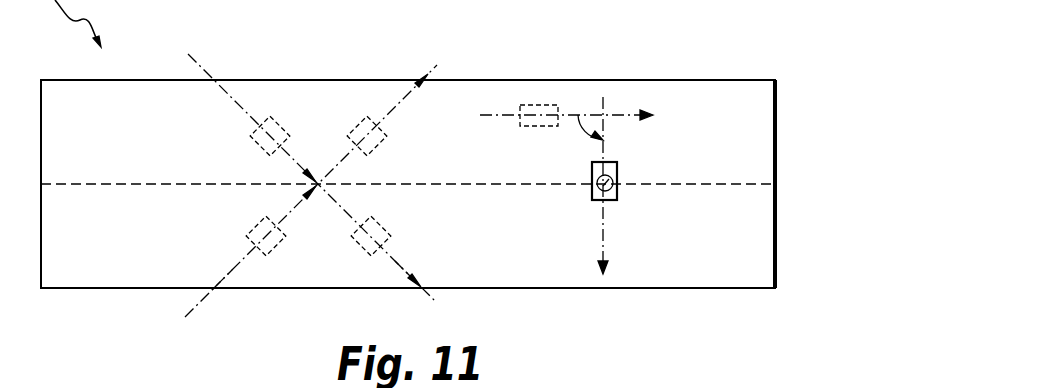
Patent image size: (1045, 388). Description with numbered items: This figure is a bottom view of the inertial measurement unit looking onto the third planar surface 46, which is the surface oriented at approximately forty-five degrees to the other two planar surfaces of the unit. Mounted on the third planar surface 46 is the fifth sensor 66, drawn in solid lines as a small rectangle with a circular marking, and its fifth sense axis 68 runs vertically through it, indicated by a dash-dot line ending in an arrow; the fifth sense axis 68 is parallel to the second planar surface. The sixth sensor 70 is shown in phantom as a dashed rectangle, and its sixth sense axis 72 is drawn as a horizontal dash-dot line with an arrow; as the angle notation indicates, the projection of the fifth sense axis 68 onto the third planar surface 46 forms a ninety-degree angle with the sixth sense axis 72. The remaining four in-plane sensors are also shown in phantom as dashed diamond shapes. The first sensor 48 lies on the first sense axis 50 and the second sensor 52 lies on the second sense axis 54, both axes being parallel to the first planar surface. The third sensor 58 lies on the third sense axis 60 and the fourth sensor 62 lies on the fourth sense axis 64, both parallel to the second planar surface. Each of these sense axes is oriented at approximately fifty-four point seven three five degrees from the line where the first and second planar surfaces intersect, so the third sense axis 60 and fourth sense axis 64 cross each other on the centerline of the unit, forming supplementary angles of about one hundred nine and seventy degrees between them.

The third planar surface 46 is at (713, 92).
The first sensor 48 is at (250, 225).
The first sense axis 50 is at (238, 266).
The second sensor 52 is at (390, 243).
The second sense axis 54 is at (392, 258).
The third sensor 58 is at (278, 120).
The third sense axis 60 is at (230, 97).
The fourth sensor 62 is at (362, 120).
The fourth sense axis 64 is at (400, 107).
The fifth sensor 66 is at (618, 192).
The fifth sense axis 68 is at (598, 242).
The sixth sensor 70 is at (540, 105).
The sixth sense axis 72 is at (623, 113).